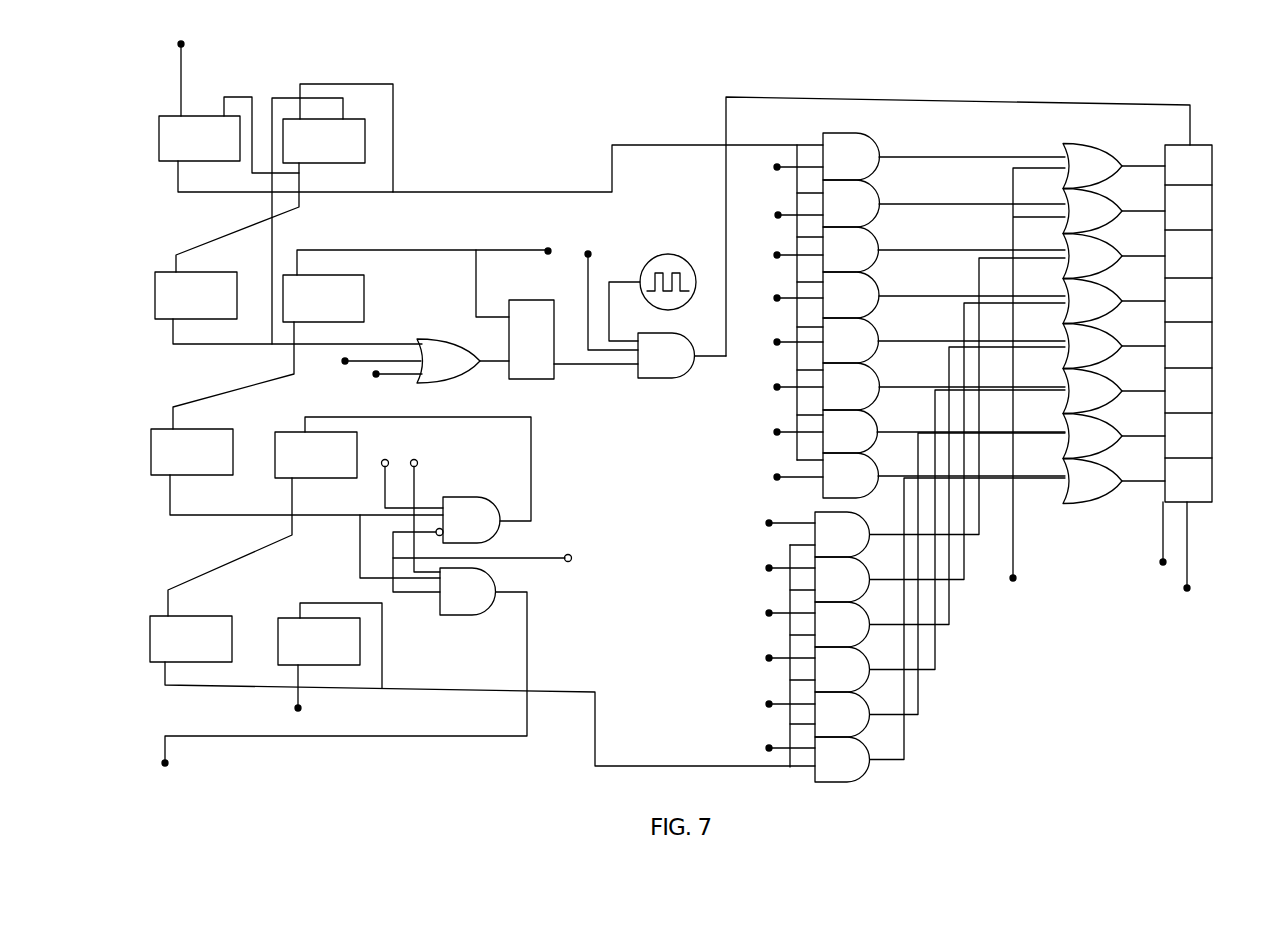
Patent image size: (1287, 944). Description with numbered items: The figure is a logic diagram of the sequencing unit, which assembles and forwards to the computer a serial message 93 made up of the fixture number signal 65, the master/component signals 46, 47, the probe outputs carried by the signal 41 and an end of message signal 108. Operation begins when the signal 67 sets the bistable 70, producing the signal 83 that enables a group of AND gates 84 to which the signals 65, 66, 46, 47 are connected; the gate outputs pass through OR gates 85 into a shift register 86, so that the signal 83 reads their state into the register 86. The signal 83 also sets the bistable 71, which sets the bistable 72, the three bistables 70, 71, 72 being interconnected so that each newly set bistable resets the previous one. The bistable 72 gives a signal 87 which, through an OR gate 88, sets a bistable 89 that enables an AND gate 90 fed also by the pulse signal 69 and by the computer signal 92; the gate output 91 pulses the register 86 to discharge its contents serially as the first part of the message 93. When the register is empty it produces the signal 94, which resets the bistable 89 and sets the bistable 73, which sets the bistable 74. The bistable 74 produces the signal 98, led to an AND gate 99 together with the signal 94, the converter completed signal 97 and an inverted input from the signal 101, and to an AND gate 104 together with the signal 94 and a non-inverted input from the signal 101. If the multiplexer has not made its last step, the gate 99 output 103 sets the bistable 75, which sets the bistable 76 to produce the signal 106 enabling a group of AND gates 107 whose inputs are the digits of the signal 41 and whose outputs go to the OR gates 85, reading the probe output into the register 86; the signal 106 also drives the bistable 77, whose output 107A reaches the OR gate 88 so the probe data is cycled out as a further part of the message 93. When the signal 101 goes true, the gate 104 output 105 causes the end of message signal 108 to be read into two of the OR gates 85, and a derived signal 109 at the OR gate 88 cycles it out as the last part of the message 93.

The output of A/D converter 41 is at (770, 512).
The master/component signal 46 is at (780, 160).
The master/component signal 47 is at (778, 212).
The fixture number signal 65 is at (771, 375).
The number of probes signal 66 is at (771, 245).
The initiating signal 67 is at (183, 62).
The pulse signal 69 is at (650, 258).
The bistable 70 is at (199, 138).
The bistable 71 is at (324, 141).
The bistable 72 is at (196, 295).
The bistable 73 is at (323, 298).
The bistable 74 is at (192, 452).
The bistable 75 is at (316, 455).
The bistable 76 is at (191, 639).
The bistable 77 is at (319, 641).
The enabling signal 83 is at (435, 193).
The group of AND gates 84 is at (858, 124).
The OR gates 85 is at (1075, 504).
The shift register 86 is at (1212, 176).
The signal from bistable 72 87 is at (240, 345).
The OR gate 88 is at (428, 338).
The bistable 89 is at (540, 380).
The AND gate 90 is at (663, 379).
The output of AND gate 90 91 is at (726, 117).
The signal from the computer 92 is at (588, 252).
The message 93 is at (1187, 578).
The register empty signal 94 is at (438, 250).
The converter completed signal 97 is at (400, 444).
The signal from bistable 74 98 is at (225, 514).
The AND gate 99 is at (472, 497).
The multiplexer last step signal 101 is at (580, 558).
The output of AND gate 99 103 is at (531, 465).
The AND gate 104 is at (466, 616).
The output of AND gate 104 105 is at (527, 628).
The enabling signal 106 is at (562, 690).
The group of AND gates 107 is at (816, 786).
The output of bistable 77 107A is at (346, 364).
The end of message signal 108 is at (1014, 584).
The end of message cycling signal 109 is at (378, 378).